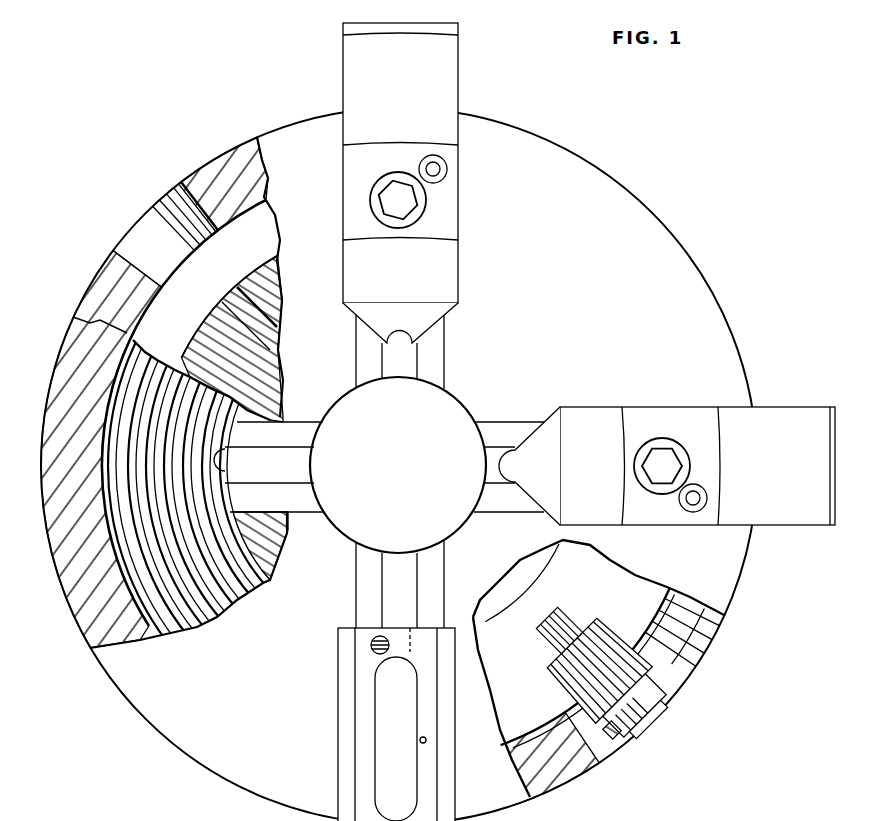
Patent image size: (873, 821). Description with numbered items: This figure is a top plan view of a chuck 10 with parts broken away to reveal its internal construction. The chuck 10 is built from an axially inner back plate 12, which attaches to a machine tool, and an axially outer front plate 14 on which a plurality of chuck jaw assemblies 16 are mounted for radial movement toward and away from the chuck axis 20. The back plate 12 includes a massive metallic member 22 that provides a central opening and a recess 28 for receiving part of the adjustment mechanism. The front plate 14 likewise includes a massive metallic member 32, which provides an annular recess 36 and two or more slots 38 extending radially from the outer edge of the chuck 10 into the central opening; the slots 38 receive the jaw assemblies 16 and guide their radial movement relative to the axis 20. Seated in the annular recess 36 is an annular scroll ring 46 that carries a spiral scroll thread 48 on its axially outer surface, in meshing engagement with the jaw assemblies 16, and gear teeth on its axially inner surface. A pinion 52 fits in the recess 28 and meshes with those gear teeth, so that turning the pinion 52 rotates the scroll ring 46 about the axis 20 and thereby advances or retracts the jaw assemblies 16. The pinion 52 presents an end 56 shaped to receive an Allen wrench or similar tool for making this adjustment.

The chuck 10 is at (742, 184).
The back plate 12 is at (734, 660).
The front plate 14 is at (621, 167).
The chuck jaw assemblies 16 is at (468, 68).
The chuck axis 20 is at (395, 465).
The massive metallic member 22 is at (577, 773).
The recess 28 is at (603, 739).
The massive metallic member 32 is at (579, 283).
The annular recess 36 is at (229, 452).
The slots 38 is at (390, 576).
The scroll ring 46 is at (126, 575).
The scroll thread 48 is at (202, 616).
The pinion 52 is at (672, 724).
The end 56 is at (668, 694).